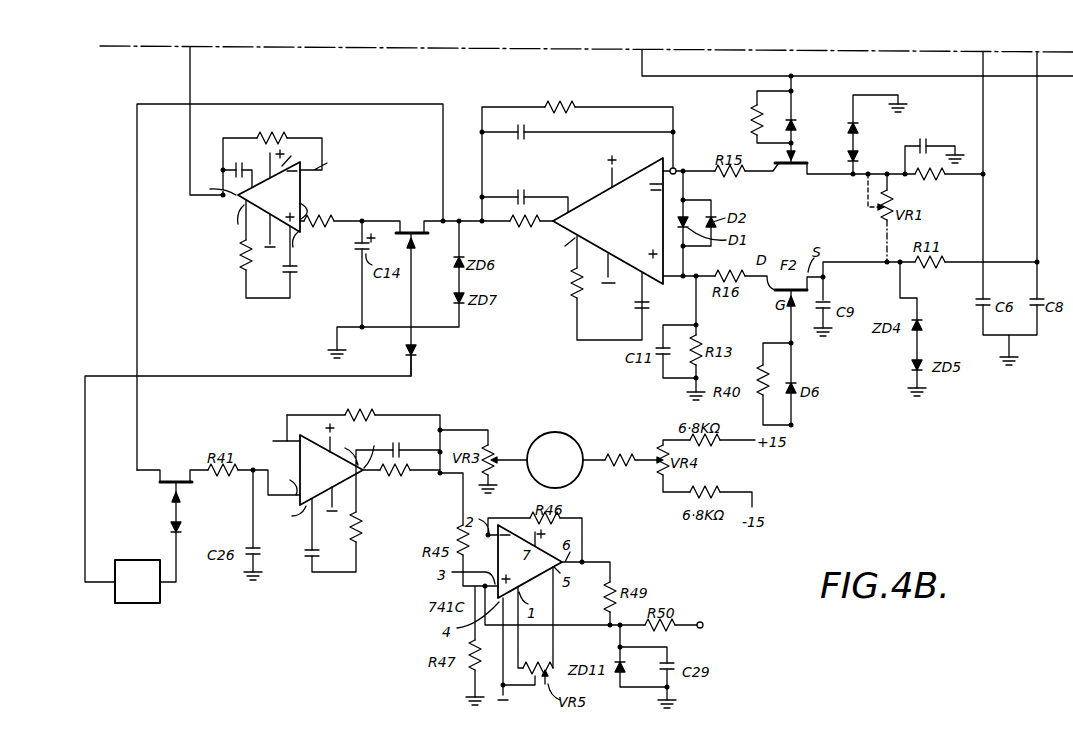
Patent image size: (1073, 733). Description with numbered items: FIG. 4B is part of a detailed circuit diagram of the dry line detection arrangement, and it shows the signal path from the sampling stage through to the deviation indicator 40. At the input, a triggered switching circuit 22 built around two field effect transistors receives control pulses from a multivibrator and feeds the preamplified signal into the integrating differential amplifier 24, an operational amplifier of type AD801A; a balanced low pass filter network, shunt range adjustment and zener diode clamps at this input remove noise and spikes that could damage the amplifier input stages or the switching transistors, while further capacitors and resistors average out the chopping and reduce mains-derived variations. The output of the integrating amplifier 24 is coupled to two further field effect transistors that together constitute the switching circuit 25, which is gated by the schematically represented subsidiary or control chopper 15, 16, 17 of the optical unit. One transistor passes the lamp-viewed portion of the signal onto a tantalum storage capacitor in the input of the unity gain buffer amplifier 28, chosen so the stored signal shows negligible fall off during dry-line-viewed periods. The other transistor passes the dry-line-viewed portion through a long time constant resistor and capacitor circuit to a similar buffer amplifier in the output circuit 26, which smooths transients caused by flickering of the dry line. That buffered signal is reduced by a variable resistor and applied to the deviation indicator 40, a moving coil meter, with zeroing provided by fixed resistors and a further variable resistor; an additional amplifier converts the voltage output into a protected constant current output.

The subsidiary control chopper 15 is at (167, 596).
The subsidiary control chopper 16 is at (167, 596).
The subsidiary control chopper 17 is at (137, 608).
The switching circuit 22 is at (824, 91).
The integrating differential amplifier 24 is at (545, 264).
The switching circuit 25 is at (412, 218).
The output circuit 26 is at (368, 572).
The unity gain buffer amplifier 28 is at (222, 211).
The deviation indicator 40 is at (578, 481).